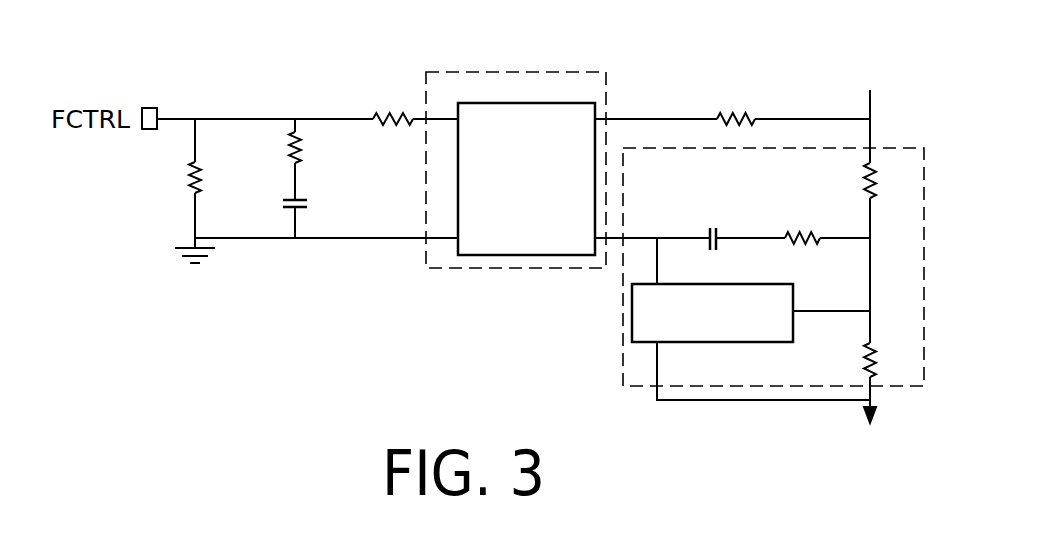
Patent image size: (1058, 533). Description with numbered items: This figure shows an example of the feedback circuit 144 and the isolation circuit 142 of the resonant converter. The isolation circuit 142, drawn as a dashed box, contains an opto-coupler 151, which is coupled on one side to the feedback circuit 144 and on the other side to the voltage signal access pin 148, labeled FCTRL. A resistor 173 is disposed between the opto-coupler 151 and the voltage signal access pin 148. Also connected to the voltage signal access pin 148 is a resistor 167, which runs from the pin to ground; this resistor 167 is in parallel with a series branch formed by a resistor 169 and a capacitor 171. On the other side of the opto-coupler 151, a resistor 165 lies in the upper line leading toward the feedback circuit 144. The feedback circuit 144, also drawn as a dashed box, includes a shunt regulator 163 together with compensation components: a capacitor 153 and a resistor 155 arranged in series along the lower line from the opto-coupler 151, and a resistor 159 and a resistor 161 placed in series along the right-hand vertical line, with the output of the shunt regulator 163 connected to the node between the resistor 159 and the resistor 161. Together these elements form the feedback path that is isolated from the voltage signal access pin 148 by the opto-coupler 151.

The isolation circuit 142 is at (532, 72).
The feedback circuit 144 is at (905, 147).
The voltage signal access pin 148 is at (148, 107).
The opto-coupler 151 is at (568, 102).
The capacitor 153 is at (717, 232).
The resistor 155 is at (803, 232).
The resistor 159 is at (873, 190).
The resistor 161 is at (875, 348).
The shunt regulator 163 is at (758, 342).
The resistor 165 is at (745, 115).
The resistor Rfmin 167 is at (193, 190).
The resistor Rss 169 is at (292, 153).
The capacitor Css 171 is at (287, 207).
The resistor 173 is at (385, 112).